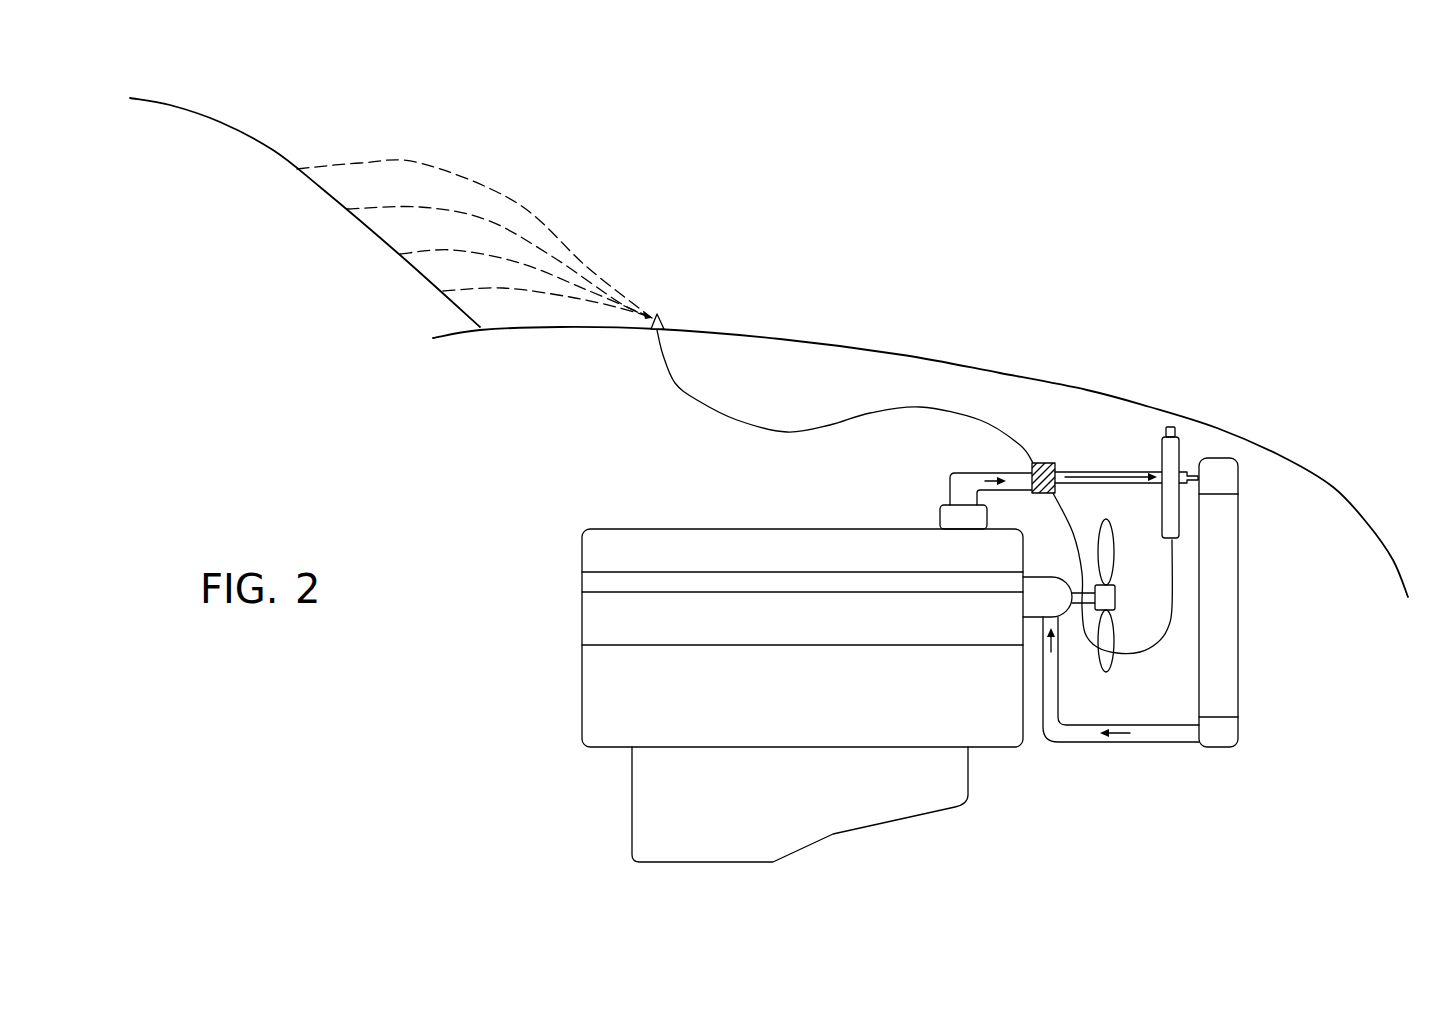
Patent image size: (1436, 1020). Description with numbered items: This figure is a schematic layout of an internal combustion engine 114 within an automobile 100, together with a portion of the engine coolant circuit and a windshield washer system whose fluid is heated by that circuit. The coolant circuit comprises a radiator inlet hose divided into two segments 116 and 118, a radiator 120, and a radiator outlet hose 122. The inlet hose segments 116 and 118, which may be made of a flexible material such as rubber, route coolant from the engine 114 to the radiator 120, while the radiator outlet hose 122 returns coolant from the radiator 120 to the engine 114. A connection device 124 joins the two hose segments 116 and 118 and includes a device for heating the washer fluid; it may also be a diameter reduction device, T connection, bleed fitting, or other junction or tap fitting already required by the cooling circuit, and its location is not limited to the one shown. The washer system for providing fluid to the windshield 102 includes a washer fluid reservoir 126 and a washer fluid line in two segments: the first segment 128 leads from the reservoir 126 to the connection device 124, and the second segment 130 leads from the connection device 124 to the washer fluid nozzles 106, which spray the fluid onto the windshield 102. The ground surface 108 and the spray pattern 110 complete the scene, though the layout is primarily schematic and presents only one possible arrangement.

The automobile 100 is at (1180, 282).
The windshield 102 is at (275, 150).
The washer fluid nozzles 106 is at (663, 320).
The ground surface 108 is at (902, 353).
The water spray 110 is at (517, 203).
The internal combustion engine 114 is at (582, 708).
The radiator inlet hose segment 116 is at (950, 483).
The radiator inlet hose segment 118 is at (1120, 468).
The radiator 120 is at (1240, 680).
The radiator outlet hose 122 is at (1087, 742).
The connection device 124 is at (1033, 465).
The washer fluid reservoir 126 is at (1180, 443).
The first segment of washer fluid line 128 is at (1160, 640).
The second segment of washer fluid line 130 is at (693, 392).